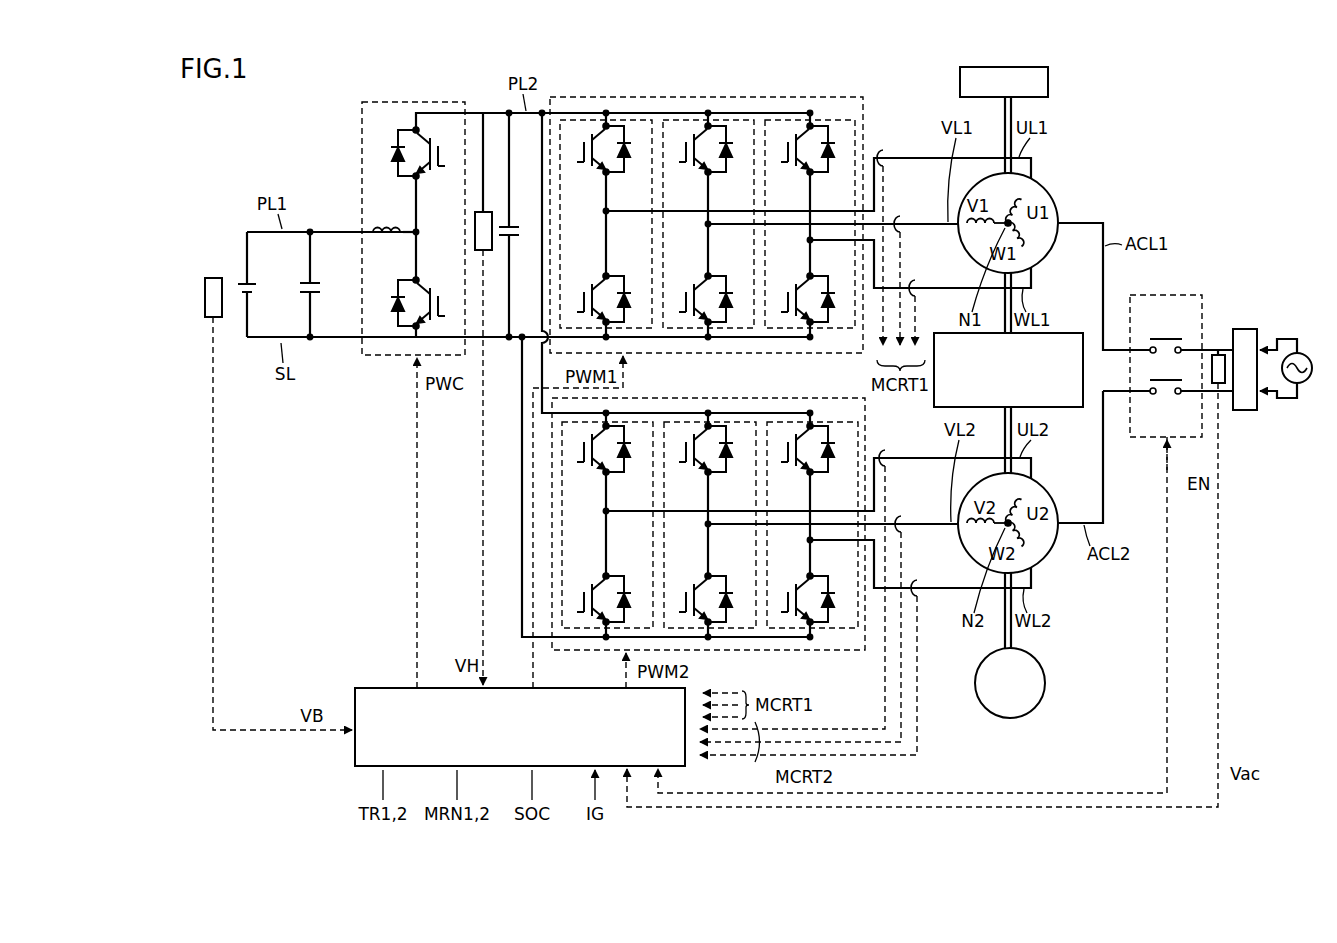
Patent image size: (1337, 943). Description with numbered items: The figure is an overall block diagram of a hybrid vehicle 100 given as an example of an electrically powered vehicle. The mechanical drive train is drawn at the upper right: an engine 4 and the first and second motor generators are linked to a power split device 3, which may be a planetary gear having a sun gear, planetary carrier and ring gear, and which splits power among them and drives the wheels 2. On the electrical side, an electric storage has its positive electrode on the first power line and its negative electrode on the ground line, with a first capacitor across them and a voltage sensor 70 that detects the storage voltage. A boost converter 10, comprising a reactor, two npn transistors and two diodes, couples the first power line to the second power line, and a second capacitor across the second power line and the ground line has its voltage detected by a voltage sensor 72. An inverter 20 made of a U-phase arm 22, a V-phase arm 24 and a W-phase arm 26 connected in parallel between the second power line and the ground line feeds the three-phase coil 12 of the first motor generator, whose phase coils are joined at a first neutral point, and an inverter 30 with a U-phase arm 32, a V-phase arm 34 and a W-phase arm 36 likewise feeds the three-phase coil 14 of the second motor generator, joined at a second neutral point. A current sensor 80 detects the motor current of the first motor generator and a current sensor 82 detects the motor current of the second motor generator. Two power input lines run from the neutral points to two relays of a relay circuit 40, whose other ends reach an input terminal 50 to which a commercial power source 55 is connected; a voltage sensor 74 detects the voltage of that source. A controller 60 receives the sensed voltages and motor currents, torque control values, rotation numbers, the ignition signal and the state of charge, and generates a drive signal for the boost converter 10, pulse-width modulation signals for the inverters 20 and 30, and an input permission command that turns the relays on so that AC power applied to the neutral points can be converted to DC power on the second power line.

The hybrid vehicle 100 is at (1216, 91).
The wheels 2 is at (1046, 684).
The power split device 3 is at (1062, 333).
The engine 4 is at (1050, 84).
The boost converter 10 is at (377, 357).
The three-phase coil 12 is at (1035, 217).
The three-phase coil 14 is at (1037, 519).
The inverter 20 is at (787, 354).
The U-phase arm 22 is at (618, 119).
The V-phase arm 24 is at (721, 119).
The W-phase arm 26 is at (821, 119).
The inverter 30 is at (788, 651).
The U-phase arm 32 is at (637, 420).
The V-phase arm 34 is at (738, 420).
The W-phase arm 36 is at (838, 420).
The relay circuit 40 is at (1166, 349).
The input terminal 50 is at (1246, 329).
The commercial power source 55 is at (1300, 384).
The controller 60 is at (436, 688).
The voltage sensor 70 is at (213, 278).
The voltage sensor 72 is at (483, 212).
The voltage sensor 74 is at (1218, 355).
The current sensor 80 is at (888, 151).
The current sensor 82 is at (891, 452).